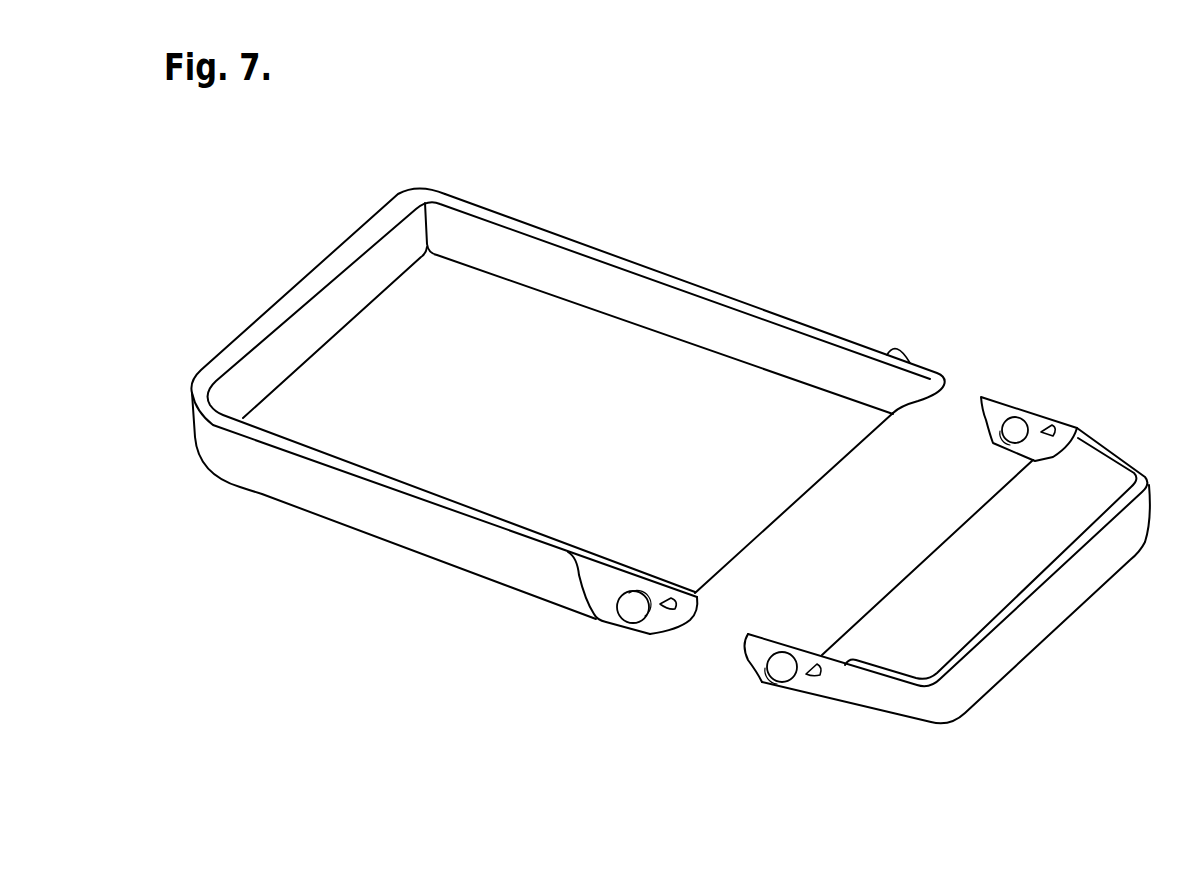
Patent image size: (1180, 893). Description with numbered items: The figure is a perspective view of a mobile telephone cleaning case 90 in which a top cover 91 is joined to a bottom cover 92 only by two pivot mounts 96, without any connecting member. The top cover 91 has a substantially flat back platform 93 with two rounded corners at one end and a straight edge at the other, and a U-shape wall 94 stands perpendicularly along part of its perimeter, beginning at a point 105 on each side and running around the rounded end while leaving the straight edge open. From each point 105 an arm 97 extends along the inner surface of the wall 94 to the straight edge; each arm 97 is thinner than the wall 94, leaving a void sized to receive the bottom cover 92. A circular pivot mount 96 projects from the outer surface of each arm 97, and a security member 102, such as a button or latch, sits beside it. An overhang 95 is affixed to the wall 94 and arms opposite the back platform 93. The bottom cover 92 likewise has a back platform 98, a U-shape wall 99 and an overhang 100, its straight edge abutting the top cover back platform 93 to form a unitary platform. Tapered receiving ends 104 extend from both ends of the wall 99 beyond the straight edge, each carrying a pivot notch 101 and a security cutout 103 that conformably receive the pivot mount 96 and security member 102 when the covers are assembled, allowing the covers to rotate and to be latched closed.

The mobile telephone cleaning case 90 is at (758, 228).
The top cover 91 is at (428, 180).
The bottom cover 92 is at (1177, 459).
The back platform 93 is at (778, 518).
The U-shape wall 94 is at (298, 510).
The overhang 95 is at (383, 487).
The pivot mount 96 is at (620, 624).
The arm 97 is at (688, 618).
The back platform 98 is at (938, 546).
The wall 99 is at (933, 725).
The overhang 100 is at (1023, 604).
The pivot notch 101 is at (768, 688).
The security member 102 is at (663, 612).
The security cutout 103 is at (806, 676).
The receiving end 104 is at (748, 636).
The point 105 is at (590, 617).